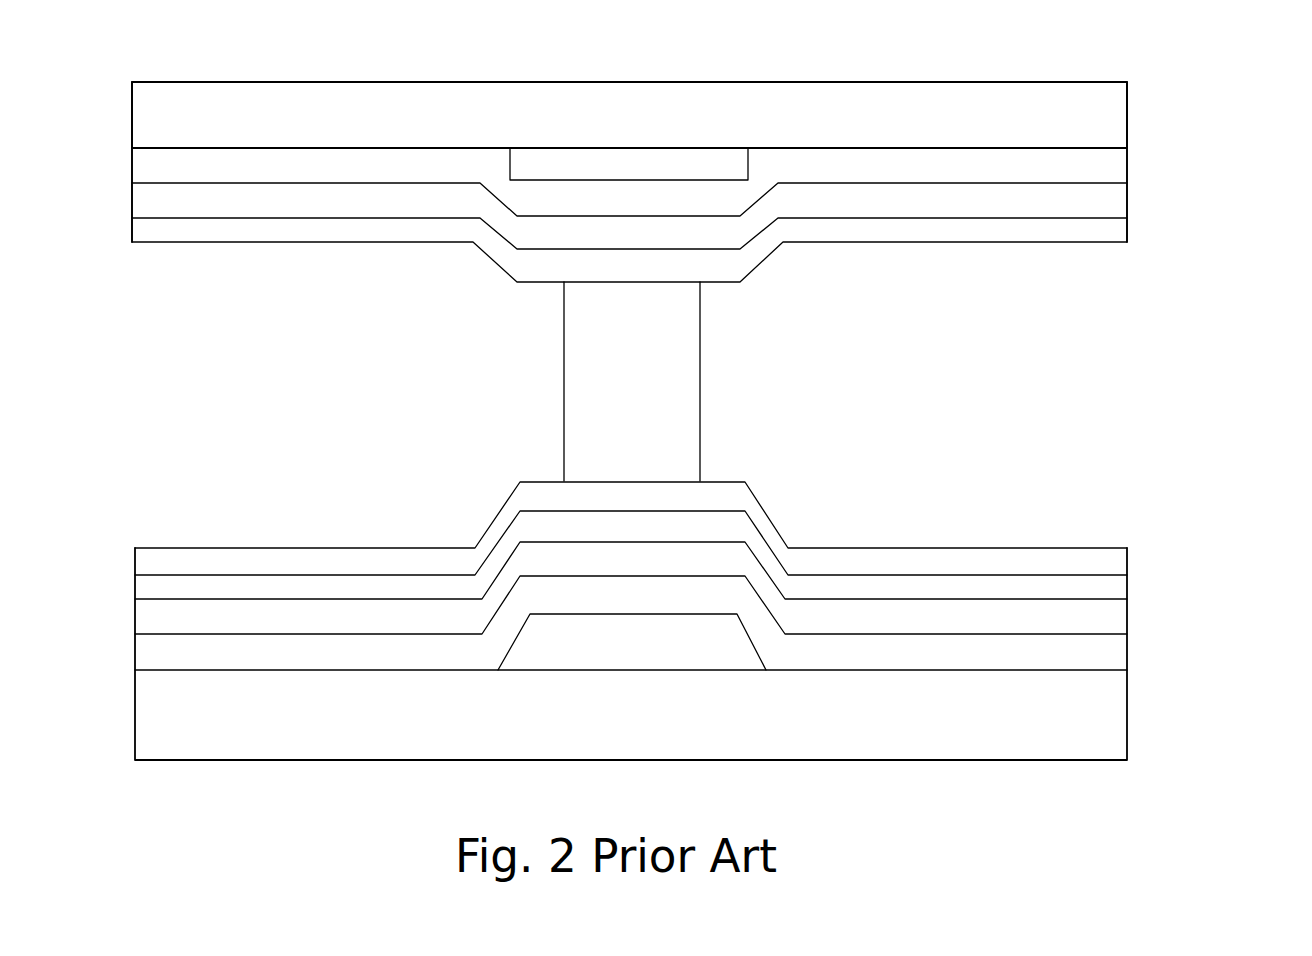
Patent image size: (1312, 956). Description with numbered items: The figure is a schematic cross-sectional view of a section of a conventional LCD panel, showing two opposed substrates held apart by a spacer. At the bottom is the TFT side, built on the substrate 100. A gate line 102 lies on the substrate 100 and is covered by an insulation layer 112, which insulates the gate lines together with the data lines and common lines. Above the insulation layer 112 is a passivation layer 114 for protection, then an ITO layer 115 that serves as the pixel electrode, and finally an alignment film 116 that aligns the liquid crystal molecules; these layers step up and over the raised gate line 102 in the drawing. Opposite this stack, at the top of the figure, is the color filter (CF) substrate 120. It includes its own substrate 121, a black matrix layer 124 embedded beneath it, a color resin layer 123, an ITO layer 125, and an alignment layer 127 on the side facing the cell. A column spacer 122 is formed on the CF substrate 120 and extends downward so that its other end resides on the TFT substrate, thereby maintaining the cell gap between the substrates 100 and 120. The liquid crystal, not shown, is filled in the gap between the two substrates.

The substrate 100 is at (1120, 715).
The gate line 102 is at (676, 650).
The insulation layer 112 is at (1120, 658).
The passivation layer 114 is at (1120, 626).
The ITO layer 115 is at (1117, 592).
The alignment film 116 is at (1120, 562).
The color filter substrate 120 is at (712, 152).
The substrate 121 is at (1107, 113).
The column spacer 122 is at (681, 350).
The color resin layer 123 is at (1107, 168).
The black matrix layer 124 is at (655, 165).
The ITO layer 125 is at (1107, 203).
The alignment layer 127 is at (1203, 64).